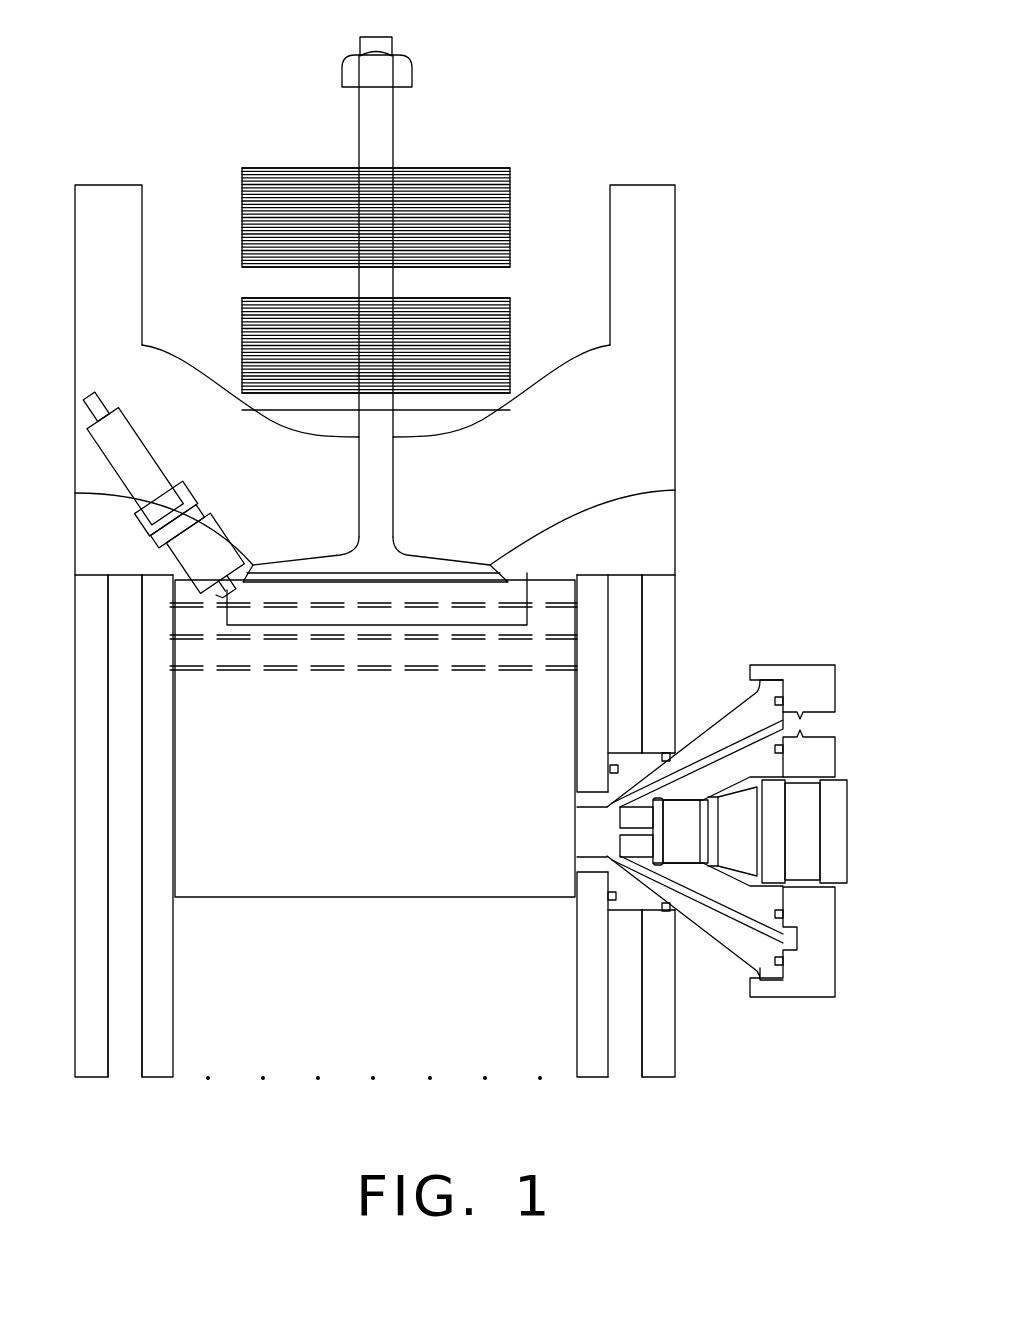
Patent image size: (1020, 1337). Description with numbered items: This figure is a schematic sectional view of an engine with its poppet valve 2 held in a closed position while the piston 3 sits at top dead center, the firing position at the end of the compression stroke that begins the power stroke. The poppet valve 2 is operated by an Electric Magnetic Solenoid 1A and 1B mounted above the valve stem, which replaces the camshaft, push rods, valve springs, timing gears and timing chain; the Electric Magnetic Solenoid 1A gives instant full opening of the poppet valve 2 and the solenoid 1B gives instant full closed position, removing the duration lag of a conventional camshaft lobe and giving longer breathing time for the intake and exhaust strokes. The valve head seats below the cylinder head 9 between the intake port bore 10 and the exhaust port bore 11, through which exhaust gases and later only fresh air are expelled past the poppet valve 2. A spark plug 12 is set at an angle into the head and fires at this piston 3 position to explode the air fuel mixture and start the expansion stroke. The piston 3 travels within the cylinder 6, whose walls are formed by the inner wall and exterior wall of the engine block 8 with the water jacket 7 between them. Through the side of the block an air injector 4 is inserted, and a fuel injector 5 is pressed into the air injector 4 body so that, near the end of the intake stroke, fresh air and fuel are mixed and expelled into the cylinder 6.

The Electric Magnetic Solenoid 1A is at (435, 177).
The Electric Magnetic Solenoid 1B is at (435, 263).
The poppet valve 2 is at (541, 309).
The piston 3 is at (504, 735).
The air injector 4 is at (758, 795).
The fuel injector 5 is at (765, 811).
The cylinder 6 is at (457, 859).
The water jacket 7 is at (473, 826).
The inner wall and exterior wall of the engine block 8 is at (490, 841).
The cylinder head 9 is at (457, 386).
The intake port bore 10 is at (497, 391).
The exhaust port bore 11 is at (464, 485).
The spark plug 12 is at (160, 343).